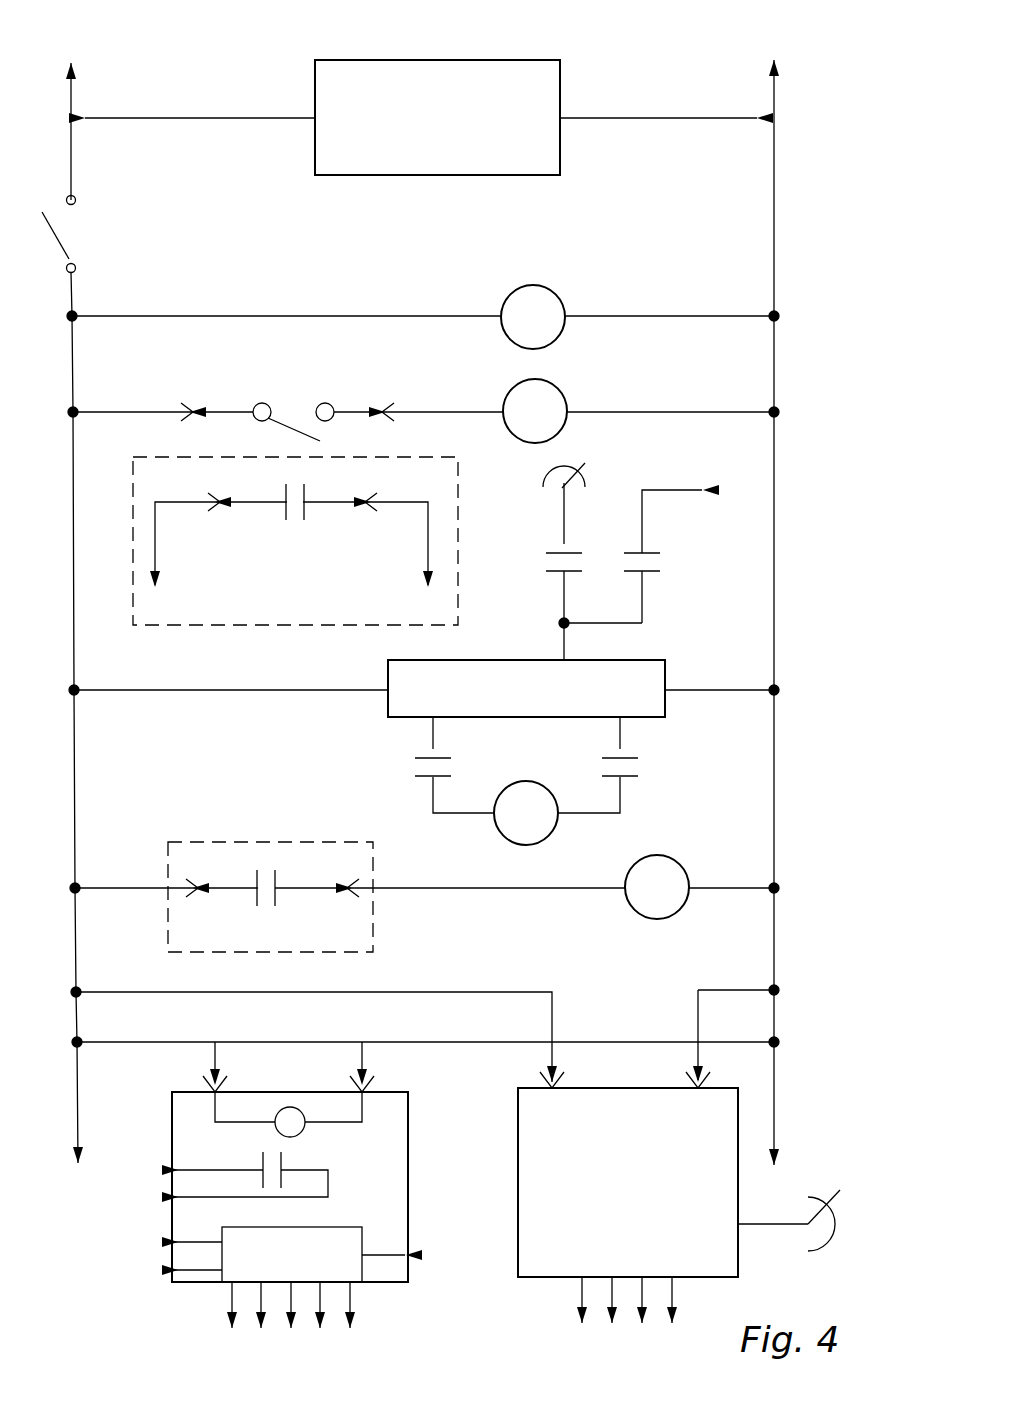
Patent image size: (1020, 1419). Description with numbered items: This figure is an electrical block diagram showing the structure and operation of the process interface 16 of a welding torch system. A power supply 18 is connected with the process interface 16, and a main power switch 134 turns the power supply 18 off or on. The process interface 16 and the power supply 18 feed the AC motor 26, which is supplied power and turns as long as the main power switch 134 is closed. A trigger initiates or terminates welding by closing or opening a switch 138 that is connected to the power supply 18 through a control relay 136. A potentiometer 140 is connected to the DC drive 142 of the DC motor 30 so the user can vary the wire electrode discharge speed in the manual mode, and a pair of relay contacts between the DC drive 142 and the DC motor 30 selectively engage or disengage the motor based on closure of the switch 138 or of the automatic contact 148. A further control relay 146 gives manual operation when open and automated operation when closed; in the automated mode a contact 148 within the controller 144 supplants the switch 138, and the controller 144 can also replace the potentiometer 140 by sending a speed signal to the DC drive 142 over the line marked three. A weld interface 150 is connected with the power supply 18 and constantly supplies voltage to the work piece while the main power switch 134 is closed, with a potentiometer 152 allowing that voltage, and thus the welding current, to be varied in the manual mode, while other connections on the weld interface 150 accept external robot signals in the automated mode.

The process interface 16 is at (220, 79).
The power supply 18 is at (320, 60).
The AC motor 26 is at (549, 287).
The DC motor 30 is at (518, 845).
The main power switch 134 is at (80, 256).
The control relay 136 is at (560, 384).
The switch 138 is at (268, 404).
The potentiometer 140 is at (585, 480).
The DC drive 142 is at (650, 674).
The controller 144 is at (175, 1320).
The control relay 146 is at (636, 905).
The contact 148 is at (296, 520).
The weld interface 150 is at (480, 1128).
The potentiometer 152 is at (835, 1212).